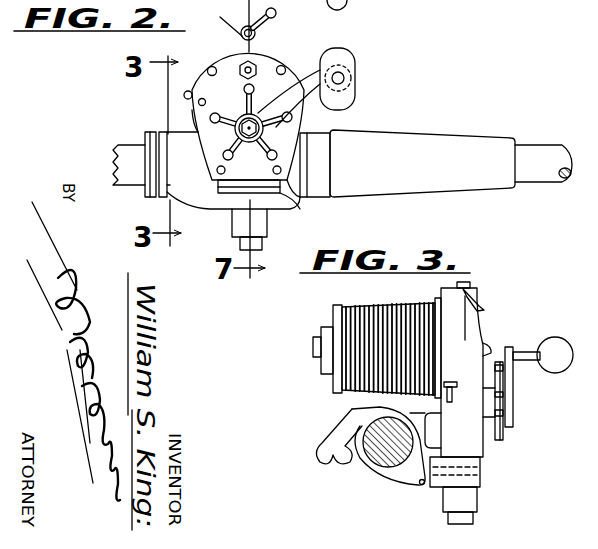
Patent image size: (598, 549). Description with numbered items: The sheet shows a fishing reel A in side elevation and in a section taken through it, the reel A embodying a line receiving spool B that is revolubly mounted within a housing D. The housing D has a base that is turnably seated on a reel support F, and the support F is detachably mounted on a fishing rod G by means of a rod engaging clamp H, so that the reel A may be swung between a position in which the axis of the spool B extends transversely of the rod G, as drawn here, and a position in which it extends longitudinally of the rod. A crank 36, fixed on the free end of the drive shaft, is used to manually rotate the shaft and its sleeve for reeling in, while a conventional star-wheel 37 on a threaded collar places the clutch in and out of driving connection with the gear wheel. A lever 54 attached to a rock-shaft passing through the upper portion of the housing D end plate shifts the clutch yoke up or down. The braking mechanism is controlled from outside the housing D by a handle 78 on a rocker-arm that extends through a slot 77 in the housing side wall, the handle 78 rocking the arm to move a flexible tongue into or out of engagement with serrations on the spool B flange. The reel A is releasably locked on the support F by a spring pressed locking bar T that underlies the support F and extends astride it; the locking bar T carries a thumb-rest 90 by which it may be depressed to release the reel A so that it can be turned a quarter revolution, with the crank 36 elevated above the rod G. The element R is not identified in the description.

In FIG. 2, the crank 36 is at (357, 78).
In FIG. 3, the crank 36 is at (515, 347).
In FIG. 2, the star-wheel 37 is at (203, 114).
In FIG. 3, the star-wheel 37 is at (503, 437).
In FIG. 2, the lever 54 is at (278, 13).
In FIG. 3, the lever 54 is at (472, 286).
In FIG. 3, the slot 77 is at (445, 430).
In FIG. 2, the handle 78 is at (184, 95).
In FIG. 3, the handle 78 is at (449, 382).
In FIG. 2, the thumb-rest 90 is at (192, 190).
In FIG. 2, the fishing reel A is at (300, 34).
In FIG. 3, the fishing reel A is at (487, 325).
In FIG. 3, the line receiving spool B is at (384, 302).
In FIG. 2, the housing D is at (208, 47).
In FIG. 2, the reel support F is at (266, 192).
In FIG. 2, the fishing rod G is at (425, 138).
In FIG. 3, the fishing rod G is at (373, 460).
In FIG. 3, the rod engaging clamp H is at (340, 415).
In FIG. 3, the end piece R is at (321, 329).
In FIG. 2, the locking bar T is at (216, 203).
In FIG. 3, the locking bar T is at (481, 478).